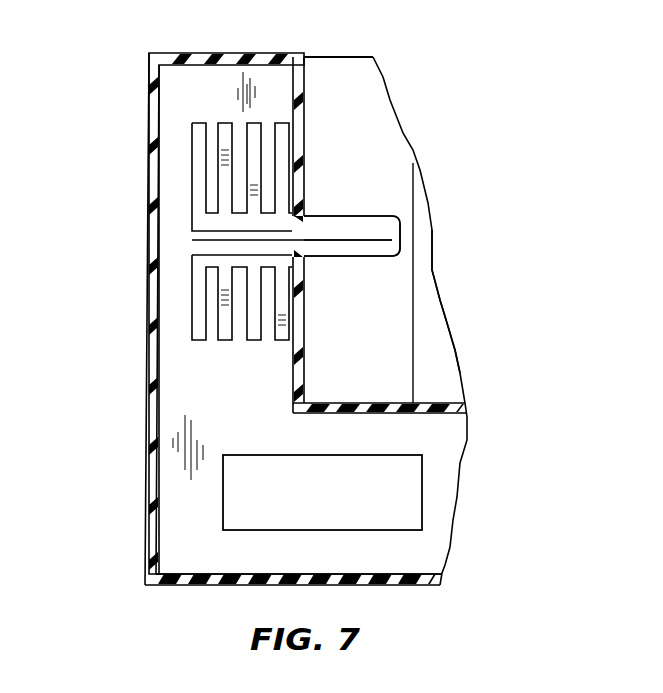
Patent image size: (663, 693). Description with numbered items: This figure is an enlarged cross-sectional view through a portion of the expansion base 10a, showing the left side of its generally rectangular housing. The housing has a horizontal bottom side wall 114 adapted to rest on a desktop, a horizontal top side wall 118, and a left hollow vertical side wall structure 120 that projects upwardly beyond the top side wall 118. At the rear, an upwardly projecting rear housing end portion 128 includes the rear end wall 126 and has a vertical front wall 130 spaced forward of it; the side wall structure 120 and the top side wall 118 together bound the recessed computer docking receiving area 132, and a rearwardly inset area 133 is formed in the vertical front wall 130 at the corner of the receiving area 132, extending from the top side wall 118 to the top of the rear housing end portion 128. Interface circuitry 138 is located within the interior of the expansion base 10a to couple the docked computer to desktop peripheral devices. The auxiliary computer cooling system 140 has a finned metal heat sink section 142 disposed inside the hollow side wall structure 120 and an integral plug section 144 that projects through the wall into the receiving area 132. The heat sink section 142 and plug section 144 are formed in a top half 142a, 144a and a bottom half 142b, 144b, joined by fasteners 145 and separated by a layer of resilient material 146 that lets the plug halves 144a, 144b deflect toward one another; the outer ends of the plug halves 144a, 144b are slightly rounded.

The expansion base 10a is at (139, 433).
The horizontal bottom side wall 114 is at (418, 586).
The horizontal top side wall 118 is at (437, 402).
The left hollow vertical side wall structure 120 is at (147, 223).
The rear end wall 126 is at (403, 565).
The rear housing end portion 128 is at (362, 57).
The vertical front wall 130 is at (428, 233).
The recessed computer docking receiving area 132 is at (433, 350).
The rearwardly inset area 133 is at (411, 320).
The interface circuitry 138 is at (267, 530).
The auxiliary computer cooling system 140 is at (205, 366).
The finned metal heat sink section 142 is at (177, 217).
The top heat sink half 142a is at (190, 150).
The bottom heat sink half 142b is at (190, 290).
The plug section 144 is at (396, 215).
The top plug half 144a is at (362, 213).
The bottom plug half 144b is at (377, 257).
The fasteners 145 is at (313, 233).
The layer of resilient material 146 is at (323, 232).